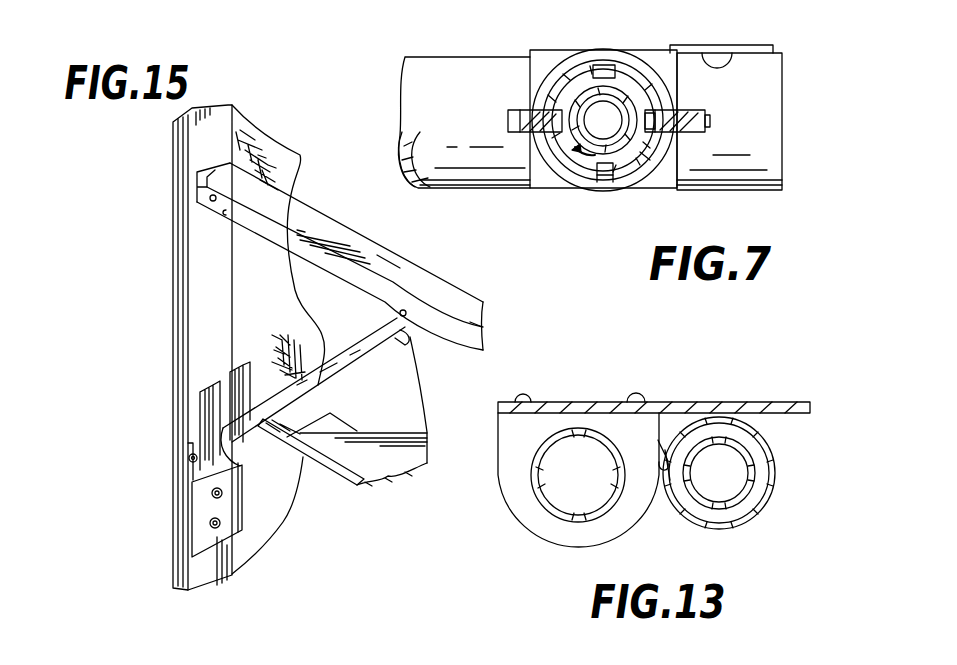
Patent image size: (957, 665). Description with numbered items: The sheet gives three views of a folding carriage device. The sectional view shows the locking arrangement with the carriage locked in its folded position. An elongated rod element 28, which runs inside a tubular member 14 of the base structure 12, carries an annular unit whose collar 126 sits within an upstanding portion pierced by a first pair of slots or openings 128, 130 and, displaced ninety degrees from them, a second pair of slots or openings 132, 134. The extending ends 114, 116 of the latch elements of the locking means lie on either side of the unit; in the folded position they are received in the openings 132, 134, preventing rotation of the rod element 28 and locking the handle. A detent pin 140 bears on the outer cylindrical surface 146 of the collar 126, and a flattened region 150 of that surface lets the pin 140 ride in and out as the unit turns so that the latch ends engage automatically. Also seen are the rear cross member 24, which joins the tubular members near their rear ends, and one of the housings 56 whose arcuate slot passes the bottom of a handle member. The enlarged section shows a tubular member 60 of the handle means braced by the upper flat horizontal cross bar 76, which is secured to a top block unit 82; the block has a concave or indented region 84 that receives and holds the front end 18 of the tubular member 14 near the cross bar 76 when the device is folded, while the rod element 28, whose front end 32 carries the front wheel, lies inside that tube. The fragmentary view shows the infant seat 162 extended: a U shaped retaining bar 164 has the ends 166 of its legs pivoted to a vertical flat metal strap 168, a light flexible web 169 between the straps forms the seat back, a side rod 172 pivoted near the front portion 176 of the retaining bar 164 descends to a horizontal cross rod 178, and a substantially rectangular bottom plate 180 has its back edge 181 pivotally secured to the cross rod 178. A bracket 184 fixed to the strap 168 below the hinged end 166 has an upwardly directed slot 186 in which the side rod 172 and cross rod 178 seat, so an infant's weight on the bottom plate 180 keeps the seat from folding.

In FIG. 13, the base structure 12 is at (752, 522).
In FIG. 13, the tubular member 14 is at (673, 512).
In FIG. 13, the front end 18 is at (774, 478).
In FIG. 7, the rear cross member 24 is at (420, 63).
In FIG. 7, the rod element 28 is at (580, 133).
In FIG. 13, the rod element 28 is at (735, 440).
In FIG. 13, the front end 32 is at (712, 520).
In FIG. 7, the housing 56 is at (772, 118).
In FIG. 7, the tubular member 60 is at (733, 42).
In FIG. 13, the tubular member 60 is at (536, 480).
In FIG. 13, the upper flat horizontal cross bar 76 is at (668, 410).
In FIG. 13, the top block unit 82 is at (535, 514).
In FIG. 13, the concave or indented region 84 is at (662, 458).
In FIG. 7, the extending end 114 is at (680, 130).
In FIG. 7, the extending end 116 is at (520, 122).
In FIG. 7, the collar 126 is at (575, 197).
In FIG. 7, the slot or opening 128 is at (607, 176).
In FIG. 7, the slot or opening 130 is at (603, 65).
In FIG. 7, the slot or opening 132 is at (640, 153).
In FIG. 7, the slot or opening 134 is at (556, 115).
In FIG. 7, the pin 140 is at (648, 122).
In FIG. 7, the outer cylindrical surface 146 is at (625, 92).
In FIG. 7, the flattened region 150 is at (628, 187).
In FIG. 15, the infant seat 162 is at (292, 200).
In FIG. 15, the U shaped retaining bar 164 is at (395, 268).
In FIG. 15, the end 166 is at (208, 199).
In FIG. 15, the vertical flat metal strap 168 is at (190, 261).
In FIG. 15, the light flexible web 169 is at (250, 130).
In FIG. 15, the side rod 172 is at (325, 358).
In FIG. 15, the front portion 176 is at (470, 322).
In FIG. 15, the horizontal cross rod 178 is at (195, 462).
In FIG. 15, the bottom plate 180 is at (362, 455).
In FIG. 15, the back edge 181 is at (362, 363).
In FIG. 15, the bracket 184 is at (195, 508).
In FIG. 15, the upwardly directed slot 186 is at (222, 376).